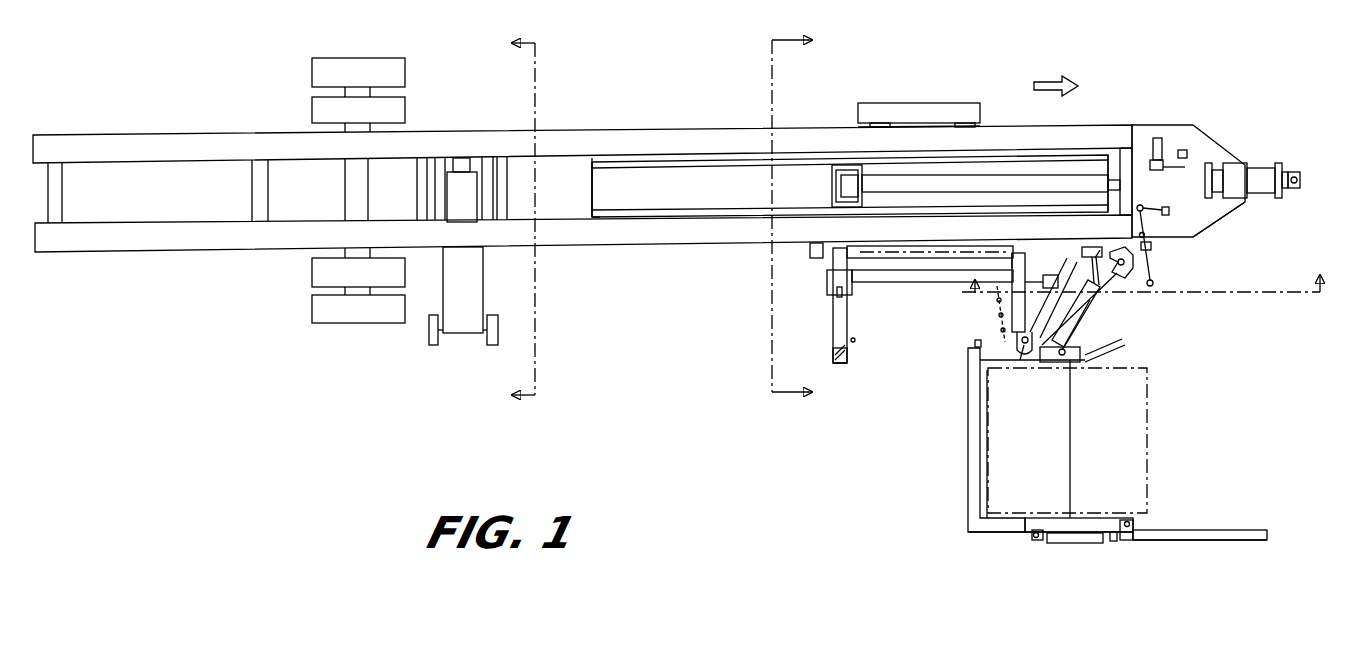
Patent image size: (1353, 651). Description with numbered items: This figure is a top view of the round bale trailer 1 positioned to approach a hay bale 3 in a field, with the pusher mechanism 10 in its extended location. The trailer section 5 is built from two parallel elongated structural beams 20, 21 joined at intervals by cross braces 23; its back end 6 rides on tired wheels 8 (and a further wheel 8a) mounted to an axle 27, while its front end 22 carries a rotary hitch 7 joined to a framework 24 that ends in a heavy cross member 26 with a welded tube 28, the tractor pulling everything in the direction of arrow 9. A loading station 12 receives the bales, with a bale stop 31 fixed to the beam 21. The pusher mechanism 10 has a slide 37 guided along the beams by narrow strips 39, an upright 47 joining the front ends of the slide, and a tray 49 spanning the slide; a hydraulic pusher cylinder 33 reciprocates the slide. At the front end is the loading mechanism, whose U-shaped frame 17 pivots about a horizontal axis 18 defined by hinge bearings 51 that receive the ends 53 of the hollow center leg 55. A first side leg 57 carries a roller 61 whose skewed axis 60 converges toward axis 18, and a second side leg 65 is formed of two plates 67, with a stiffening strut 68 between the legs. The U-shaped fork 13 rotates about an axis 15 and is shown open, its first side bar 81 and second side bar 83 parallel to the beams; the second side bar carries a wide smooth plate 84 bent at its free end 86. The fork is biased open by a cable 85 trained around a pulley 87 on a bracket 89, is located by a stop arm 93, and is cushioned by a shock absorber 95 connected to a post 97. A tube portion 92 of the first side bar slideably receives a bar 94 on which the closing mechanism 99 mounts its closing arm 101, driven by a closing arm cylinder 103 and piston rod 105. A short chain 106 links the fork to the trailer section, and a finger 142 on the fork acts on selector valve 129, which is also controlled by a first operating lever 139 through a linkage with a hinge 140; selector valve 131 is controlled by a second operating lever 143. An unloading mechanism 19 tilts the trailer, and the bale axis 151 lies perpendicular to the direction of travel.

The round bale trailer 1 is at (660, 338).
The hay bale 3 is at (1170, 392).
The trailer section 5 is at (623, 125).
The back end 6 is at (92, 147).
The rotary hitch 7 is at (1320, 150).
The tired wheels 8 is at (345, 313).
The wheel 8a is at (345, 73).
The direction of travel arrow 9 is at (1052, 78).
The pusher mechanism 10 is at (812, 150).
The loading station 12 is at (907, 54).
The fork 13 is at (965, 478).
The axis 15 is at (1021, 362).
The frame 17 is at (838, 367).
The horizontal axis 18 is at (890, 248).
The unloading mechanism 19 is at (465, 338).
The structural beam 20 is at (595, 240).
The structural beam 21 is at (510, 133).
The front end 22 is at (1090, 128).
The cross braces 23 is at (58, 190).
The framework 24 is at (1215, 142).
The cross member 26 is at (1210, 215).
The axle 27 is at (352, 292).
The tube 28 is at (1258, 173).
The bale stop 31 is at (907, 108).
The hydraulic pusher cylinder 33 is at (990, 183).
The slide 37 is at (583, 183).
The narrow strips 39 is at (690, 162).
The upright 47 is at (822, 186).
The tray 49 is at (700, 196).
The hinge bearings 51 is at (820, 258).
The ends of center leg 53 is at (830, 247).
The center leg 55 is at (935, 283).
The first side leg 57 is at (830, 318).
The roller axis 60 is at (856, 342).
The roller 61 is at (835, 357).
The second side leg 65 is at (1008, 266).
The plates 67 is at (1016, 253).
The stiffening strut 68 is at (888, 283).
The first side bar 81 is at (1008, 535).
The second side bar 83 is at (1075, 355).
The plate 84 is at (1000, 365).
The cable 85 is at (1100, 316).
The free end 86 is at (1124, 346).
The pulley 87 is at (1147, 263).
The bracket 89 is at (1150, 286).
The tube portion 92 is at (985, 530).
The stop arm 93 is at (1040, 350).
The bar 94 is at (1083, 520).
The shock absorber 95 is at (1078, 330).
The post 97 is at (1105, 290).
The closing mechanism 99 is at (1222, 544).
The closing arm 101 is at (1232, 530).
The closing arm cylinder 103 is at (1070, 543).
The piston rod 105 is at (1110, 545).
The chain 106 is at (977, 340).
The selector valve 129 is at (1050, 275).
The selector valve 131 is at (1153, 160).
The first operating lever 139 is at (1188, 185).
The hinge 140 is at (1152, 248).
The finger 142 is at (975, 345).
The second operating lever 143 is at (1190, 158).
The bale axis 151 is at (1071, 462).